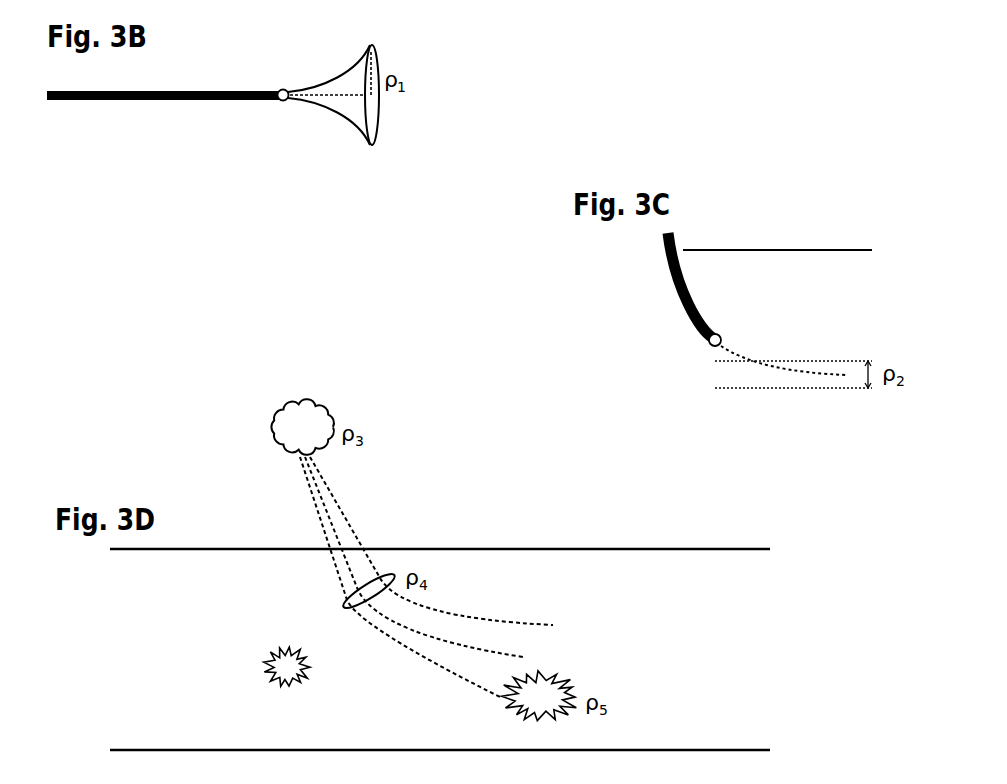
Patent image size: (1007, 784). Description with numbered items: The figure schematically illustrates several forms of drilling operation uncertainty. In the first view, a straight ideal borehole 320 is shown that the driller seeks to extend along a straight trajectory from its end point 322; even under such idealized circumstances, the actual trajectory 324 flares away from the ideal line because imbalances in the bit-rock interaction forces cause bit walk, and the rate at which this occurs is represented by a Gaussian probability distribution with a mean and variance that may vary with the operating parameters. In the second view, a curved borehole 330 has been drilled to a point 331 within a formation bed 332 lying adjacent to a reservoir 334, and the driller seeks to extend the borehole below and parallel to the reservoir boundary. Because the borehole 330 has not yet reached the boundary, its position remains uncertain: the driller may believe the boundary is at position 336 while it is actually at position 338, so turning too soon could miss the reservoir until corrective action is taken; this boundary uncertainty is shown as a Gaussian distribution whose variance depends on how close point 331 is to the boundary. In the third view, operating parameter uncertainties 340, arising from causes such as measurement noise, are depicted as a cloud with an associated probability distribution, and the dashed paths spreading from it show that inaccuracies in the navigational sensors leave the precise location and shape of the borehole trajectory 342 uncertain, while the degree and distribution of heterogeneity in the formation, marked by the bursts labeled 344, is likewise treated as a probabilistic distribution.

In FIG. 3B, the ideal borehole 320 is at (147, 101).
In FIG. 3B, the end point 322 is at (277, 101).
In FIG. 3B, the actual trajectory 324 is at (360, 135).
In FIG. 3C, the borehole 330 is at (670, 270).
In FIG. 3C, the point 331 is at (707, 342).
In FIG. 3C, the formation bed 332 is at (824, 320).
In FIG. 3C, the reservoir 334 is at (824, 450).
In FIG. 3D, the reservoir 334 is at (185, 650).
In FIG. 3C, the believed boundary position 336 is at (727, 362).
In FIG. 3C, the actual boundary position 338 is at (753, 389).
In FIG. 3D, the operating parameter uncertainties 340 is at (273, 447).
In FIG. 3D, the borehole trajectory 342 is at (345, 607).
In FIG. 3D, the impact bursts 344 is at (272, 683).